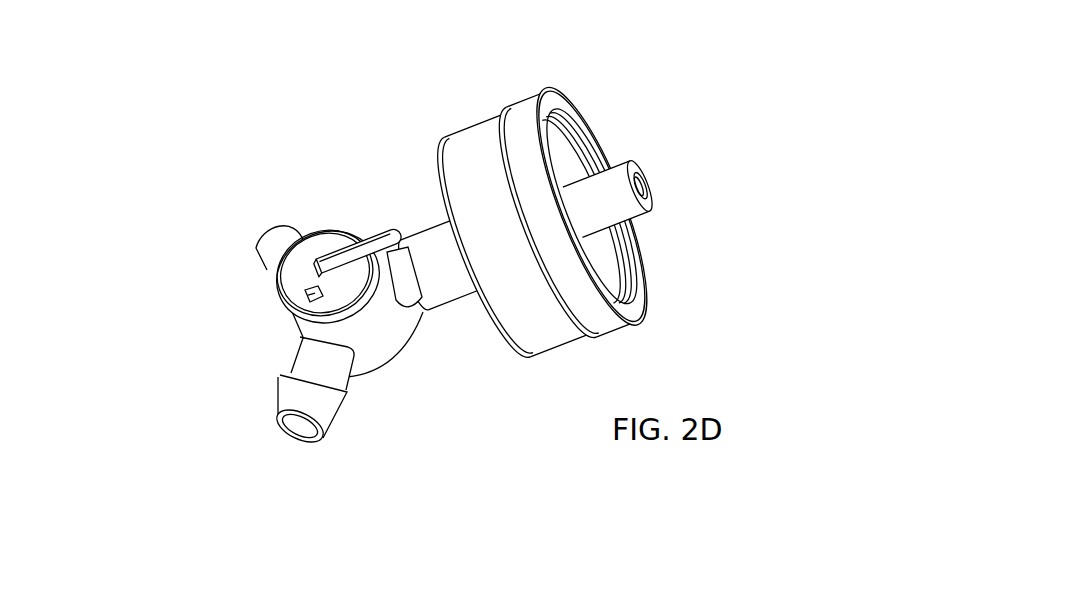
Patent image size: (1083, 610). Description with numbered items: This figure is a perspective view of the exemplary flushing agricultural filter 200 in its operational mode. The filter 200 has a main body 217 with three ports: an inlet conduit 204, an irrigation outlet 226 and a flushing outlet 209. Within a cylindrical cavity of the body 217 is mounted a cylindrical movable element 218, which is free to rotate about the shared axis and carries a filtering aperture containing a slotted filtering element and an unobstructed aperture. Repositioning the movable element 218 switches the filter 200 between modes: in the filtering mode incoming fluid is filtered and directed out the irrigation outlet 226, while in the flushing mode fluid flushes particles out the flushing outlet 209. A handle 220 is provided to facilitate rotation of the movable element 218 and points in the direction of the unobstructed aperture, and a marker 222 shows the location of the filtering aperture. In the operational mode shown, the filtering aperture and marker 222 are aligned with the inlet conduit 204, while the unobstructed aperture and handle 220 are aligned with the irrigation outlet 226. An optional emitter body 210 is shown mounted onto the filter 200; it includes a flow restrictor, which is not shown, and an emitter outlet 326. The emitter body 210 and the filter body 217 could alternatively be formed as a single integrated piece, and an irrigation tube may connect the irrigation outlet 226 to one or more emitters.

The filter 200 is at (140, 148).
The inlet conduit 204 is at (335, 380).
The flushing outlet 209 is at (262, 235).
The emitter body 210 is at (640, 144).
The main body 217 is at (400, 333).
The movable element 218 is at (323, 253).
The handle 220 is at (385, 232).
The marker 222 is at (298, 298).
The irrigation outlet 226 is at (403, 285).
The emitter outlet 326 is at (653, 203).